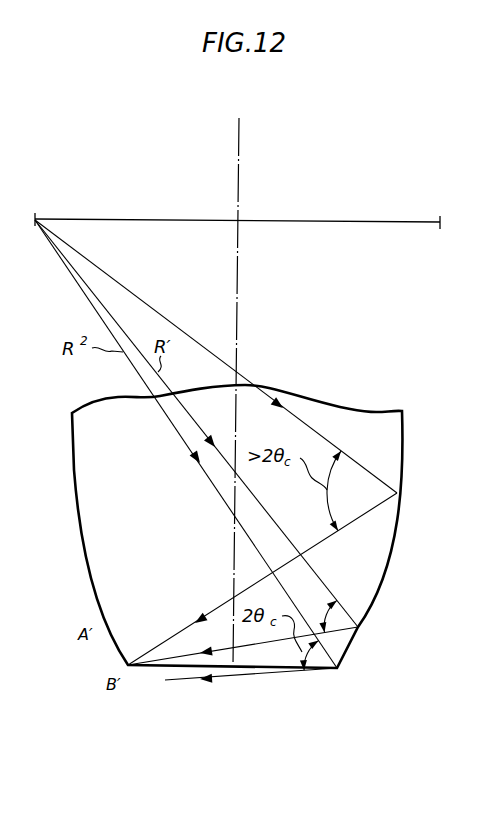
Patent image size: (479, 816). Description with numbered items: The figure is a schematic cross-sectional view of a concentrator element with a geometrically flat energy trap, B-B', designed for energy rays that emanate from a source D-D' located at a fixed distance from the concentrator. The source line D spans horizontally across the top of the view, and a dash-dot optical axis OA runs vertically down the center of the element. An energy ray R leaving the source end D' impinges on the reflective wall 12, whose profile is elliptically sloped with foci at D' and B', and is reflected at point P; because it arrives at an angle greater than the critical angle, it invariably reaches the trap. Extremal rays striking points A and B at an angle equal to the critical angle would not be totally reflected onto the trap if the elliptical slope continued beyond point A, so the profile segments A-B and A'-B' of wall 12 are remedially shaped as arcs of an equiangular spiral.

The reflective wall 12 is at (403, 433).
The optical axis OA is at (240, 137).
The source of radiant energy D is at (235, 206).
The energy ray R is at (131, 288).
The reflection point P is at (272, 558).
The impingement point A is at (251, 632).
The impingement point B is at (255, 666).